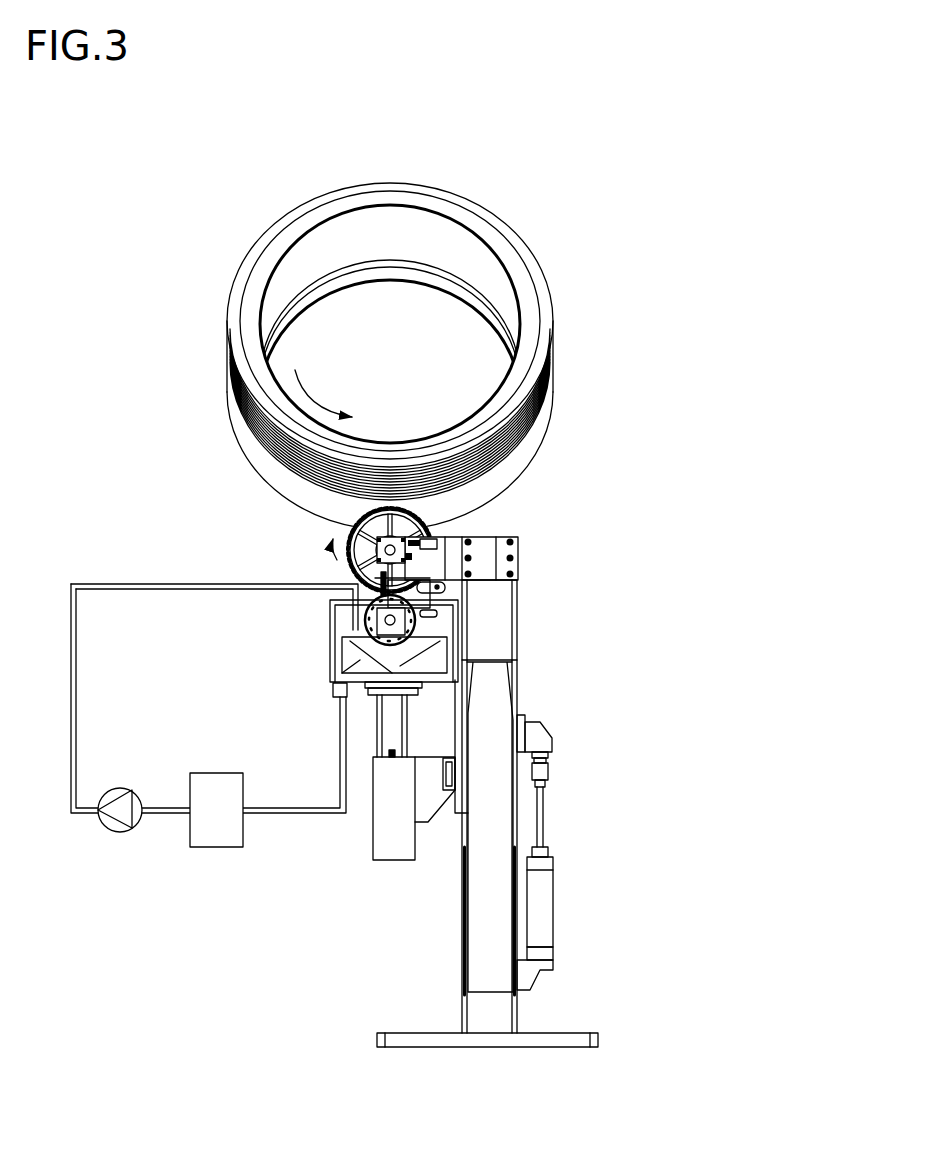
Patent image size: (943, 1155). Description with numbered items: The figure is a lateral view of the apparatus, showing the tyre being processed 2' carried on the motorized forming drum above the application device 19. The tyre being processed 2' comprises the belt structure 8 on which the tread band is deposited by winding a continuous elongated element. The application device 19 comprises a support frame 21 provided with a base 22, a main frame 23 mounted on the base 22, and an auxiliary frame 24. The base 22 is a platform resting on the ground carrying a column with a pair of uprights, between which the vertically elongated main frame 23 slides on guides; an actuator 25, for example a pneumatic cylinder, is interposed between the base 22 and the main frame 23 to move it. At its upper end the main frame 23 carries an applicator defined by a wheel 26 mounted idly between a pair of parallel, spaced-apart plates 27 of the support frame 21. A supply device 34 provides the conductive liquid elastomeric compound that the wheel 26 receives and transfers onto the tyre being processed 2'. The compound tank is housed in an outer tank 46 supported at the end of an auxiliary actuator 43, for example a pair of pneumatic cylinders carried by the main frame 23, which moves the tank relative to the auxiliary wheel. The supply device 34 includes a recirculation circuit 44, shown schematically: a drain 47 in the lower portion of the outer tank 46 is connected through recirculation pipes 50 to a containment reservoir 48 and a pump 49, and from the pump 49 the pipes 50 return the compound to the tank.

The tyre being processed 2' is at (460, 356).
The belt structure 8 is at (518, 464).
The wheel 26 is at (325, 553).
The plates 27 is at (432, 562).
The auxiliary frame 24 is at (348, 578).
The outer tank 46 is at (333, 608).
The supply device 34 is at (327, 645).
The drain 47 is at (340, 697).
The recirculation pipes 50 is at (70, 758).
The recirculation circuit 44 is at (82, 572).
The pump 49 is at (108, 832).
The containment reservoir 48 is at (205, 848).
The auxiliary actuator 43 is at (373, 832).
The main frame 23 is at (498, 601).
The application device 19 is at (543, 696).
The support frame 21 is at (454, 884).
The actuator 25 is at (553, 912).
The base 22 is at (579, 1030).